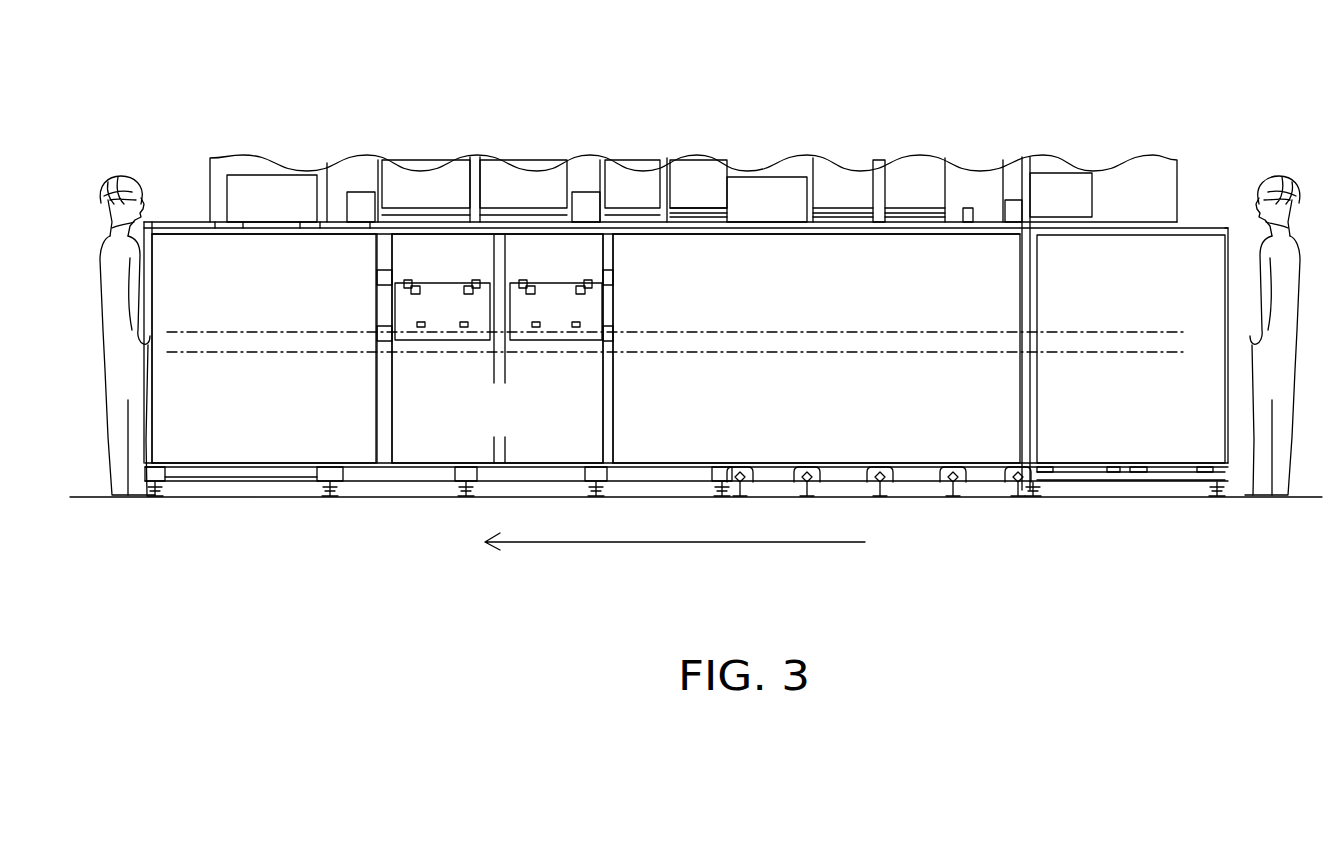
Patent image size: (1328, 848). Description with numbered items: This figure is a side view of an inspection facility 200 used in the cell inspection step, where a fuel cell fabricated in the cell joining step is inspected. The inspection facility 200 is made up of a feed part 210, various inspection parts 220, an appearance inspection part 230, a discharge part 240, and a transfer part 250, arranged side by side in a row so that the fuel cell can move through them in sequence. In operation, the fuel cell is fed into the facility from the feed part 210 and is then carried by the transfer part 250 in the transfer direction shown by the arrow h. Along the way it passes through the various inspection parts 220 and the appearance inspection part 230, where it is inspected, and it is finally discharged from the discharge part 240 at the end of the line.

The inspection facility 200 is at (686, 254).
The feed part 210 is at (1118, 257).
The various inspection parts 220 is at (746, 258).
The appearance inspection part 230 is at (527, 257).
The discharge part 240 is at (268, 257).
The transfer part 250 is at (910, 332).
The arrow (transfer direction) h is at (733, 542).